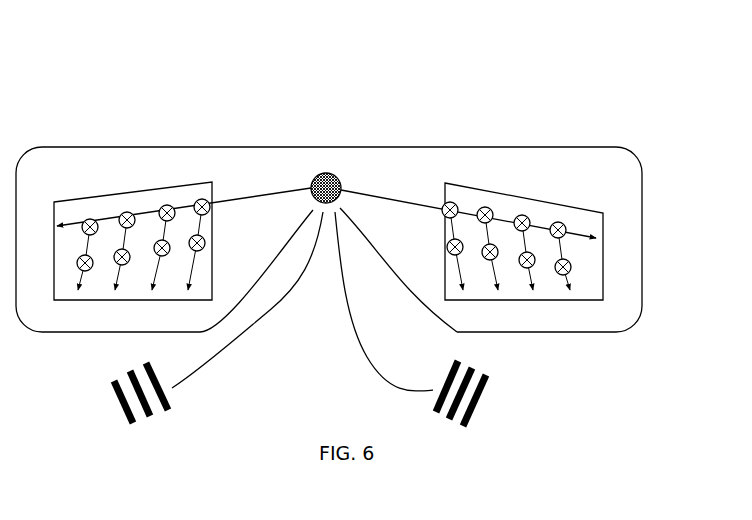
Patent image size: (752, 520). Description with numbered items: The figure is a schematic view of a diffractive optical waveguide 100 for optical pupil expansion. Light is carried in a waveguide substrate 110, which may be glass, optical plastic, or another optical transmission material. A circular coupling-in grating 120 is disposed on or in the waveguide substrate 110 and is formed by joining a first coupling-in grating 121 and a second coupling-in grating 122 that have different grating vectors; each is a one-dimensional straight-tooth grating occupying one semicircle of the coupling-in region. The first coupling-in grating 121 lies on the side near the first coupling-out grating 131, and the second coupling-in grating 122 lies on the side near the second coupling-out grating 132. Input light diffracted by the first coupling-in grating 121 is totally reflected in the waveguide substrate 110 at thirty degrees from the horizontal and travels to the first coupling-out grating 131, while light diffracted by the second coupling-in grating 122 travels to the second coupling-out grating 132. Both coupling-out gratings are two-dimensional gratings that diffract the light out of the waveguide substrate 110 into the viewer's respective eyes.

The diffractive optical waveguide 100 is at (359, 74).
The waveguide substrate 110 is at (178, 162).
The coupling-in grating 120 is at (338, 174).
The first coupling-in grating 121 is at (130, 428).
The second coupling-in grating 122 is at (490, 406).
The first coupling-out grating 131 is at (93, 207).
The second coupling-out grating 132 is at (567, 218).